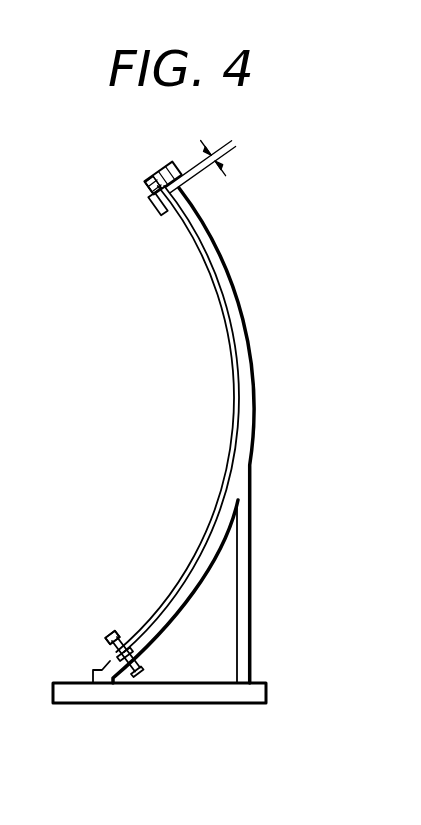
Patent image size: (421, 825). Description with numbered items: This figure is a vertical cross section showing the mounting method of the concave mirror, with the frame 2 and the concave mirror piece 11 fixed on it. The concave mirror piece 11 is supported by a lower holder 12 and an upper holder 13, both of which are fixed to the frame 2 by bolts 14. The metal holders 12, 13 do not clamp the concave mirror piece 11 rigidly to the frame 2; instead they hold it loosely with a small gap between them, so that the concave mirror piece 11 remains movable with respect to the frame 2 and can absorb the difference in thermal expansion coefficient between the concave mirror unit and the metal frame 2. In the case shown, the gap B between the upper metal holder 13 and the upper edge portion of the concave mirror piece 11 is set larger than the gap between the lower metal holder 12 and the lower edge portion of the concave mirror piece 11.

The frame 2 is at (257, 428).
The concave mirror piece 11 is at (229, 450).
The lower holder 12 is at (117, 640).
The upper holder 13 is at (152, 195).
The bolts 14 is at (170, 172).
The gap B is at (232, 141).